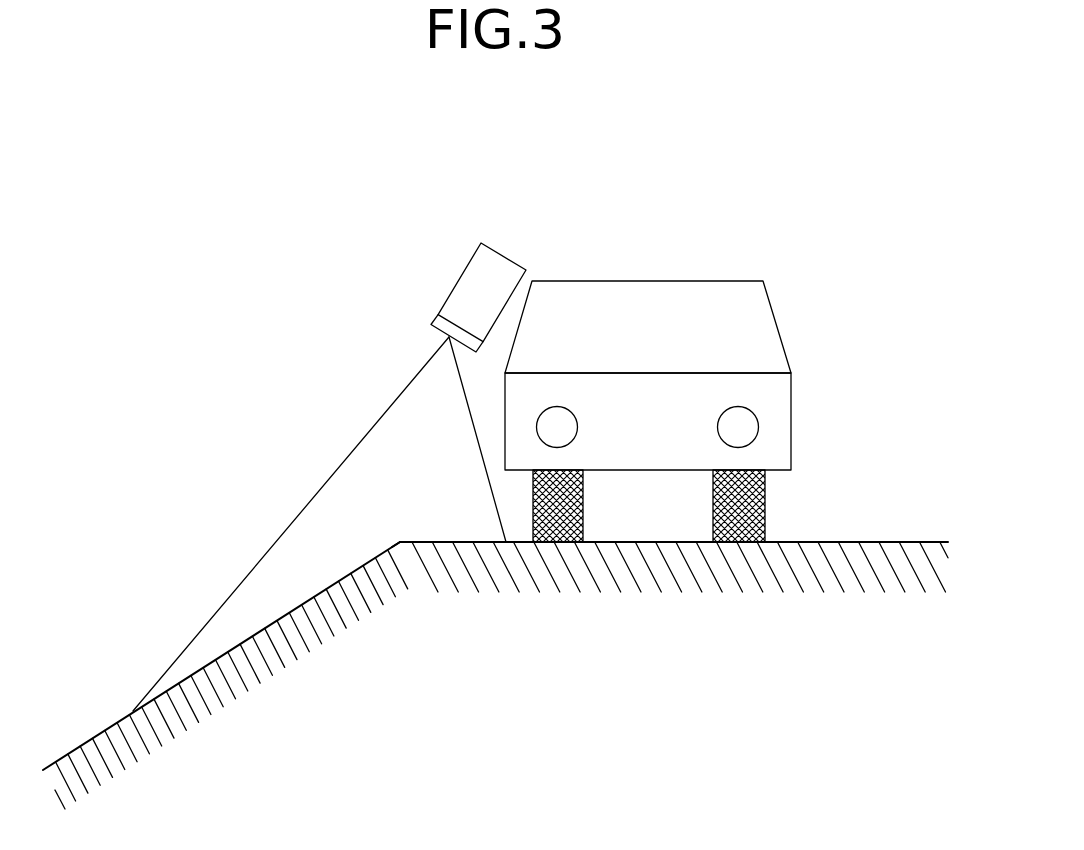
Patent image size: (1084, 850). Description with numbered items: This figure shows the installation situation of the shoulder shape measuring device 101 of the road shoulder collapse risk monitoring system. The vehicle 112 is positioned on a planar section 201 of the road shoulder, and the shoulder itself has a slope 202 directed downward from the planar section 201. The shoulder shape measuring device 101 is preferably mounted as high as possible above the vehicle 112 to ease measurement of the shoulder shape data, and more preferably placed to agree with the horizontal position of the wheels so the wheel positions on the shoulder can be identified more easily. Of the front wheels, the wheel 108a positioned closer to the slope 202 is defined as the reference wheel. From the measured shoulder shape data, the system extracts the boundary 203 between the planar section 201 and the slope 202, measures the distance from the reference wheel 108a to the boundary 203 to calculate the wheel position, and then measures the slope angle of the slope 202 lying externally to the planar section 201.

The shoulder shape measuring device 101 is at (505, 256).
The vehicle 112 is at (665, 280).
The reference wheel 108a is at (550, 542).
The planar section 201 is at (866, 542).
The slope 202 is at (203, 667).
The boundary 203 is at (401, 542).